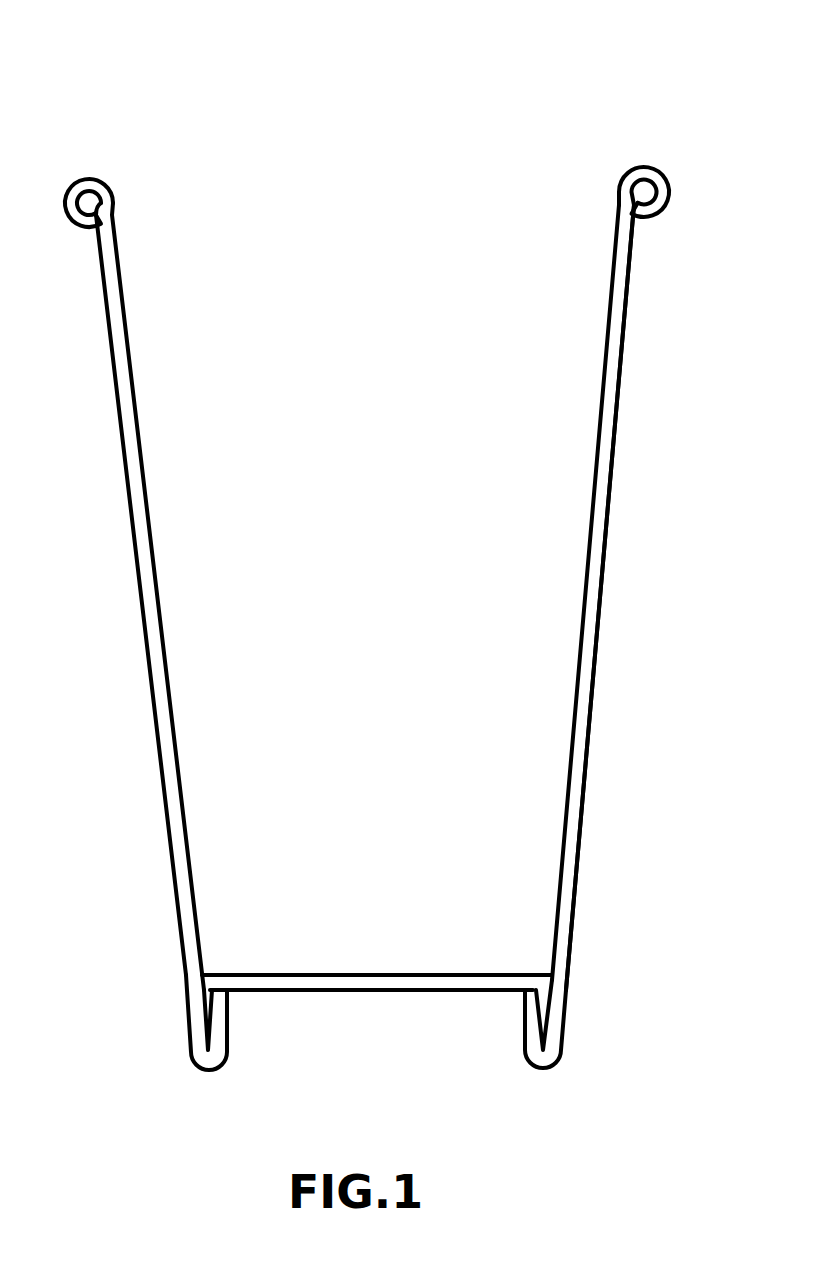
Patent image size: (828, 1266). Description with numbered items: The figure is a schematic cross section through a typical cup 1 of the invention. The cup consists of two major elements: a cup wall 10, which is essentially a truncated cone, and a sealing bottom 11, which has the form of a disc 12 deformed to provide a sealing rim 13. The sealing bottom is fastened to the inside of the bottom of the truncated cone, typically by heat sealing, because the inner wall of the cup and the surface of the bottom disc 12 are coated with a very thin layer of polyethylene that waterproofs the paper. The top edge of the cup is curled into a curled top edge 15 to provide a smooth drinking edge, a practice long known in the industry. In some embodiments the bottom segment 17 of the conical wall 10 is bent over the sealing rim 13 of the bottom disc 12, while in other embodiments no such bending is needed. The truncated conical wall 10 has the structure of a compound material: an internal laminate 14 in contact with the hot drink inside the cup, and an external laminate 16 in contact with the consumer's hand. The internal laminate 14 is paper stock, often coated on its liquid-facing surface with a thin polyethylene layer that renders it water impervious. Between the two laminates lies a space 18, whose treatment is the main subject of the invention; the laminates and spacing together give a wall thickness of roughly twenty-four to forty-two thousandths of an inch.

The cup 1 is at (508, 140).
The cup wall 10 is at (618, 363).
The sealing bottom 11 is at (450, 988).
The disc 12 is at (330, 980).
The sealing rim 13 is at (552, 1010).
The internal laminate 14 is at (583, 558).
The curled top edge 15 is at (658, 168).
The external laminate 16 is at (603, 597).
The bottom segment 17 is at (221, 1046).
The space 18 is at (147, 580).